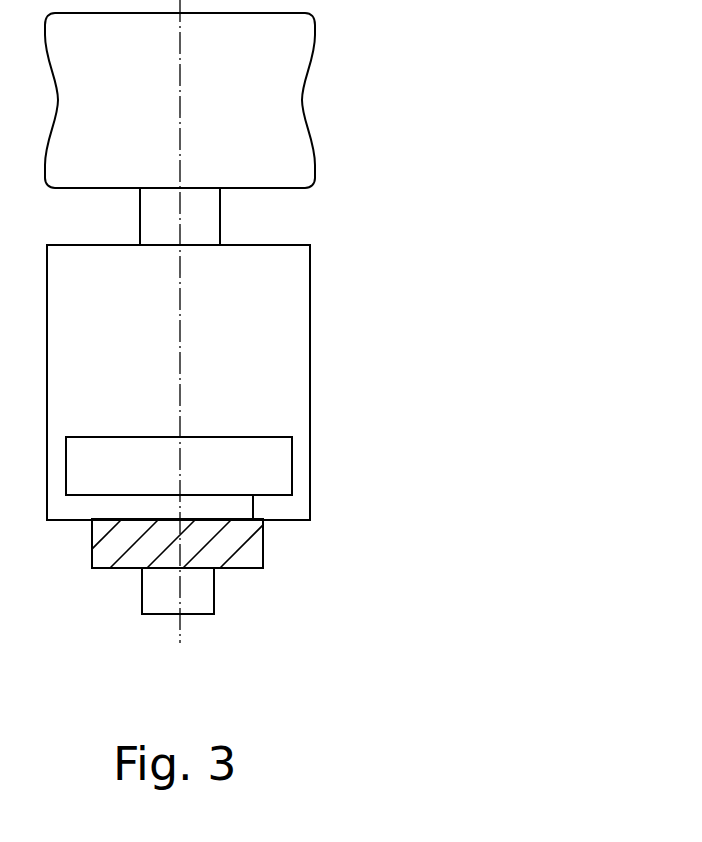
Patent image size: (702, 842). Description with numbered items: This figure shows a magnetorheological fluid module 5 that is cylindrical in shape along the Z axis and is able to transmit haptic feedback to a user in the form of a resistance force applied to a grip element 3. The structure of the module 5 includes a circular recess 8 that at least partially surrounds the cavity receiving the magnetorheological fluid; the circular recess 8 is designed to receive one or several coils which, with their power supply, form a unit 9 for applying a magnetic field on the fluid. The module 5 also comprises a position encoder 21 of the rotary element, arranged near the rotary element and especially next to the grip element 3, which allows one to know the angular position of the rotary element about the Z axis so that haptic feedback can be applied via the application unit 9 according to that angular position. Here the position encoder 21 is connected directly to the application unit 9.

The grip element 3 is at (282, 98).
The circular recess 8 is at (207, 218).
The magnetorheological fluid module 5 is at (282, 395).
The unit for applying a magnetic field 9 is at (245, 467).
The position encoder 21 is at (243, 552).
The Z axis Z is at (178, 642).